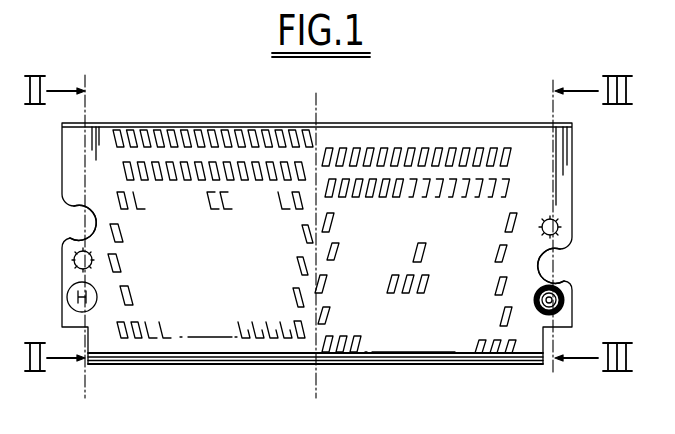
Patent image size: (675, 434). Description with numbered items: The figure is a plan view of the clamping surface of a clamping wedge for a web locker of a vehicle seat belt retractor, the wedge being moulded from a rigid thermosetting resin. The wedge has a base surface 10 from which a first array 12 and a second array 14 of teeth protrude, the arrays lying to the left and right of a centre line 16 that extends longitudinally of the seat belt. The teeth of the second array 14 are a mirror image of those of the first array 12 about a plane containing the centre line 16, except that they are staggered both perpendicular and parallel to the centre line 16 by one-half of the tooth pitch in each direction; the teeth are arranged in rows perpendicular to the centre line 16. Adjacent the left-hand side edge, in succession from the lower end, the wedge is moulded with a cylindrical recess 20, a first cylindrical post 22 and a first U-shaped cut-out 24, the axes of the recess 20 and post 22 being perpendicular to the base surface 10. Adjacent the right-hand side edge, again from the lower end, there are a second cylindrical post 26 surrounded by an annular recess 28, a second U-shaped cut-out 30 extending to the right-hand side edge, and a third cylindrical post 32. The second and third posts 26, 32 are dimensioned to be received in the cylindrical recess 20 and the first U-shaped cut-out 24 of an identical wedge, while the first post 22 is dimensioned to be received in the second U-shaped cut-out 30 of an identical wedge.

The base surface 10 is at (197, 353).
The first array of teeth 12 is at (156, 343).
The second array of teeth 14 is at (472, 348).
The centre line 16 is at (314, 375).
The cylindrical recess 20 is at (67, 299).
The first cylindrical post 22 is at (71, 259).
The first U-shaped cut-out 24 is at (76, 211).
The second cylindrical post 26 is at (561, 306).
The annular recess 28 is at (563, 295).
The second U-shaped cut-out 30 is at (561, 253).
The third cylindrical post 32 is at (559, 224).